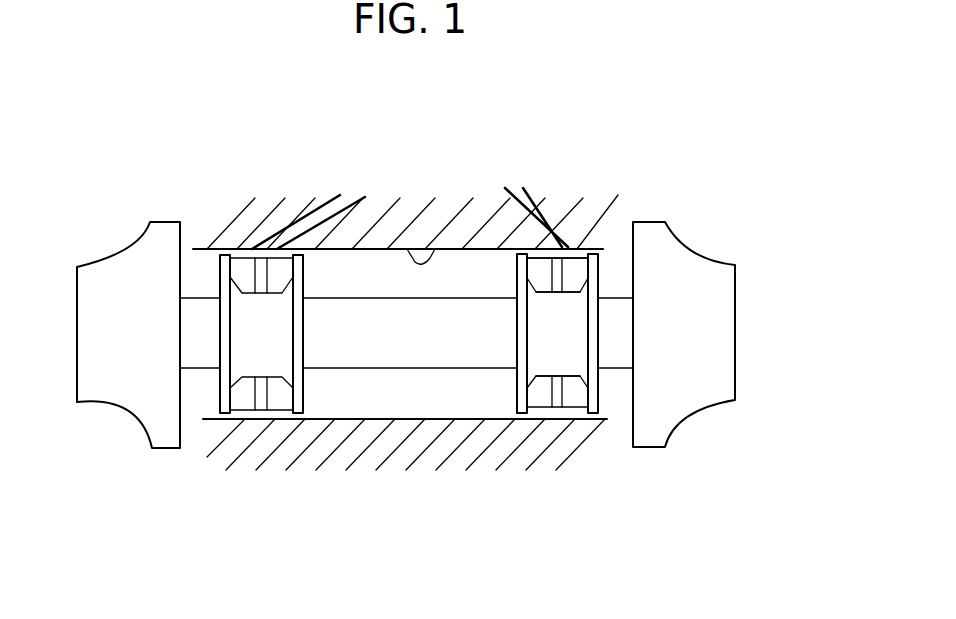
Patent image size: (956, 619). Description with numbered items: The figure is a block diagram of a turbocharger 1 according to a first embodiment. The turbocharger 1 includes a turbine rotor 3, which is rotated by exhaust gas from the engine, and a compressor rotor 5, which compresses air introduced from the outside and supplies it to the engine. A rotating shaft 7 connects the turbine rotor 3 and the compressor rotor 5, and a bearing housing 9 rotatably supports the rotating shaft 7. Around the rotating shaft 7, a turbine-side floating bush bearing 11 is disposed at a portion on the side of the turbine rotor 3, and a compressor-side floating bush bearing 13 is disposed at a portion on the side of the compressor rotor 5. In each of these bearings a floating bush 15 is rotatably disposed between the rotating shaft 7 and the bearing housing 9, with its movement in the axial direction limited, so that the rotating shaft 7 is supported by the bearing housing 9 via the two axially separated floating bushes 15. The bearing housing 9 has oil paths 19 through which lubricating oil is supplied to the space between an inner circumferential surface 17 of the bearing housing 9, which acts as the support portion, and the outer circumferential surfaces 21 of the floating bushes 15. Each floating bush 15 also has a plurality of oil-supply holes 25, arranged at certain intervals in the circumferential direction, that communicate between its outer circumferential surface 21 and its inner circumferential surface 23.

The turbocharger 1 is at (722, 168).
The turbine rotor 3 is at (723, 405).
The compressor rotor 5 is at (100, 403).
The rotating shaft 7 is at (408, 368).
The bearing housing 9 is at (388, 227).
The turbine-side floating bush bearing 11 is at (503, 390).
The compressor-side floating bush bearing 13 is at (318, 405).
The floating bush 15 is at (252, 408).
The inner circumferential surface 17 is at (427, 257).
The oil path 19 is at (328, 201).
The outer circumferential surface 21 is at (573, 258).
The inner circumferential surface 23 is at (577, 362).
The oil-supply hole 25 is at (565, 277).